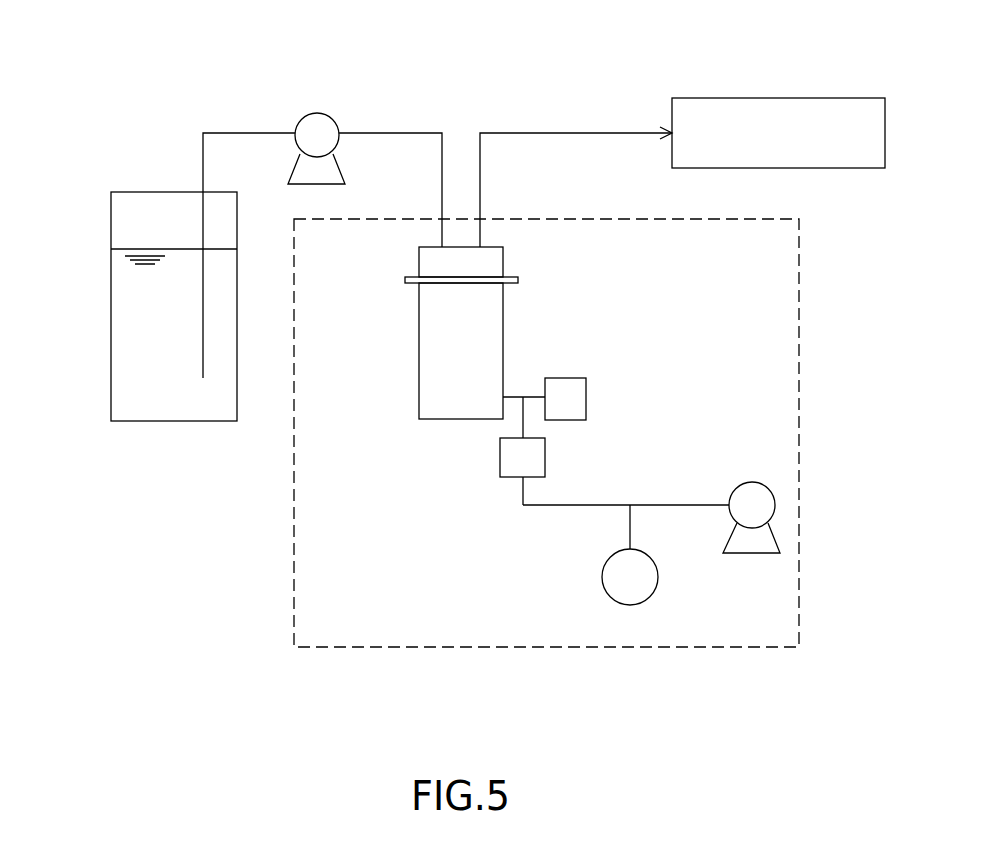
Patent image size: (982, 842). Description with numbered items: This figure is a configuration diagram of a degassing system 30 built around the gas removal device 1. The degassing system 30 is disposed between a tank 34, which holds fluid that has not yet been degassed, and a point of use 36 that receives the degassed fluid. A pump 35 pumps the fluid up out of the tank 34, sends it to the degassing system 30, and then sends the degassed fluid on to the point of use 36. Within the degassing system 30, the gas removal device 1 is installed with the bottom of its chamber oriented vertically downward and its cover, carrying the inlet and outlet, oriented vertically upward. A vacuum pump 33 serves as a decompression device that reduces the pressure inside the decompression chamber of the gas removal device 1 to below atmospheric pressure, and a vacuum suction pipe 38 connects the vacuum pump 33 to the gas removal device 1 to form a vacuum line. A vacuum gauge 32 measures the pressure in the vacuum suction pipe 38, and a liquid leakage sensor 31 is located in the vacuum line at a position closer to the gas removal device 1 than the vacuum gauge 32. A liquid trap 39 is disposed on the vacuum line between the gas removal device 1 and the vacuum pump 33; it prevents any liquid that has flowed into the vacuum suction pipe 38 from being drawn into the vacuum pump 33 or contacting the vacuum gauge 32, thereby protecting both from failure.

The gas removal device 1 is at (419, 318).
The degassing system 30 is at (800, 462).
The liquid leakage sensor 31 is at (586, 397).
The vacuum gauge 32 is at (614, 585).
The vacuum pump 33 is at (752, 553).
The tank 34 is at (111, 298).
The pump 35 is at (320, 128).
The point of use 36 is at (800, 105).
The vacuum suction pipe 38 is at (580, 505).
The liquid trap 39 is at (500, 452).